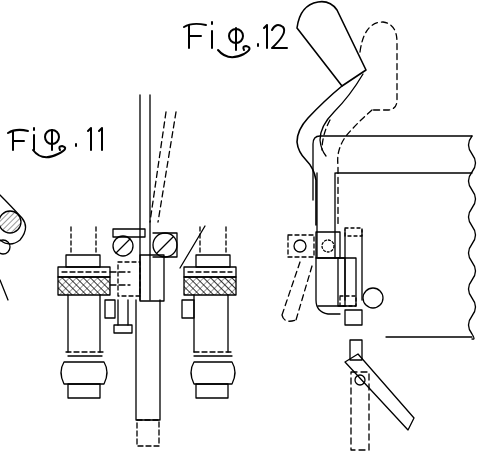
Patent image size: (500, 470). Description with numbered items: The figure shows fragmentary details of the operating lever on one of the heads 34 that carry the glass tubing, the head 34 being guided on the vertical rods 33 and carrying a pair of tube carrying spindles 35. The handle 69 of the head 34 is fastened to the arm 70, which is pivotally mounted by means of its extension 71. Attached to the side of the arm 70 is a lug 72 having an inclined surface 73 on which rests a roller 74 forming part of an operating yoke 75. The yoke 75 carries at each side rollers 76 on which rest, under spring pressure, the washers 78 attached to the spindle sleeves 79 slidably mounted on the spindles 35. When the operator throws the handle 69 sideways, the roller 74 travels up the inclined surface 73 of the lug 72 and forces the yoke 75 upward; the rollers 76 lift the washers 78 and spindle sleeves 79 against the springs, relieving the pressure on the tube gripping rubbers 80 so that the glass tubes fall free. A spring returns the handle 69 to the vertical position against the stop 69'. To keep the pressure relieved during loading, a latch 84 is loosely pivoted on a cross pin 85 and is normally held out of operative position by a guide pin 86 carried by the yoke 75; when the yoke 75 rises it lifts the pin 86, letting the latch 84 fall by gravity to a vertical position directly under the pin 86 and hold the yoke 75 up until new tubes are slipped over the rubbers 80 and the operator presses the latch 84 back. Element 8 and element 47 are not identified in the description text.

In FIG. 11, the frame member 8 is at (13, 195).
In FIG. 11, the vertical rods 33 is at (16, 222).
In FIG. 12, the head 34 is at (425, 136).
In FIG. 11, the tube carrying spindle 35 is at (72, 242).
In FIG. 11, the link 47 is at (15, 307).
In FIG. 12, the handle 69 is at (340, 56).
In FIG. 11, the stop 69' is at (116, 227).
In FIG. 11, the arm 70 is at (150, 118).
In FIG. 12, the arm 70 is at (298, 140).
In FIG. 11, the extension 71 is at (170, 233).
In FIG. 12, the extension 71 is at (294, 235).
In FIG. 11, the lug 72 is at (162, 305).
In FIG. 12, the lug 72 is at (322, 314).
In FIG. 11, the inclined surface 73 is at (207, 233).
In FIG. 12, the roller 74 is at (348, 228).
In FIG. 11, the operating yoke 75 is at (124, 333).
In FIG. 12, the operating yoke 75 is at (360, 300).
In FIG. 11, the rollers 76 is at (100, 312).
In FIG. 12, the rollers 76 is at (383, 298).
In FIG. 11, the washers 78 is at (58, 290).
In FIG. 11, the spindle sleeve 79 is at (68, 310).
In FIG. 11, the tube gripping rubbers 80 is at (62, 378).
In FIG. 11, the latch 84 is at (158, 412).
In FIG. 12, the latch 84 is at (366, 444).
In FIG. 12, the cross pin 85 is at (366, 380).
In FIG. 12, the guide pin 86 is at (362, 320).